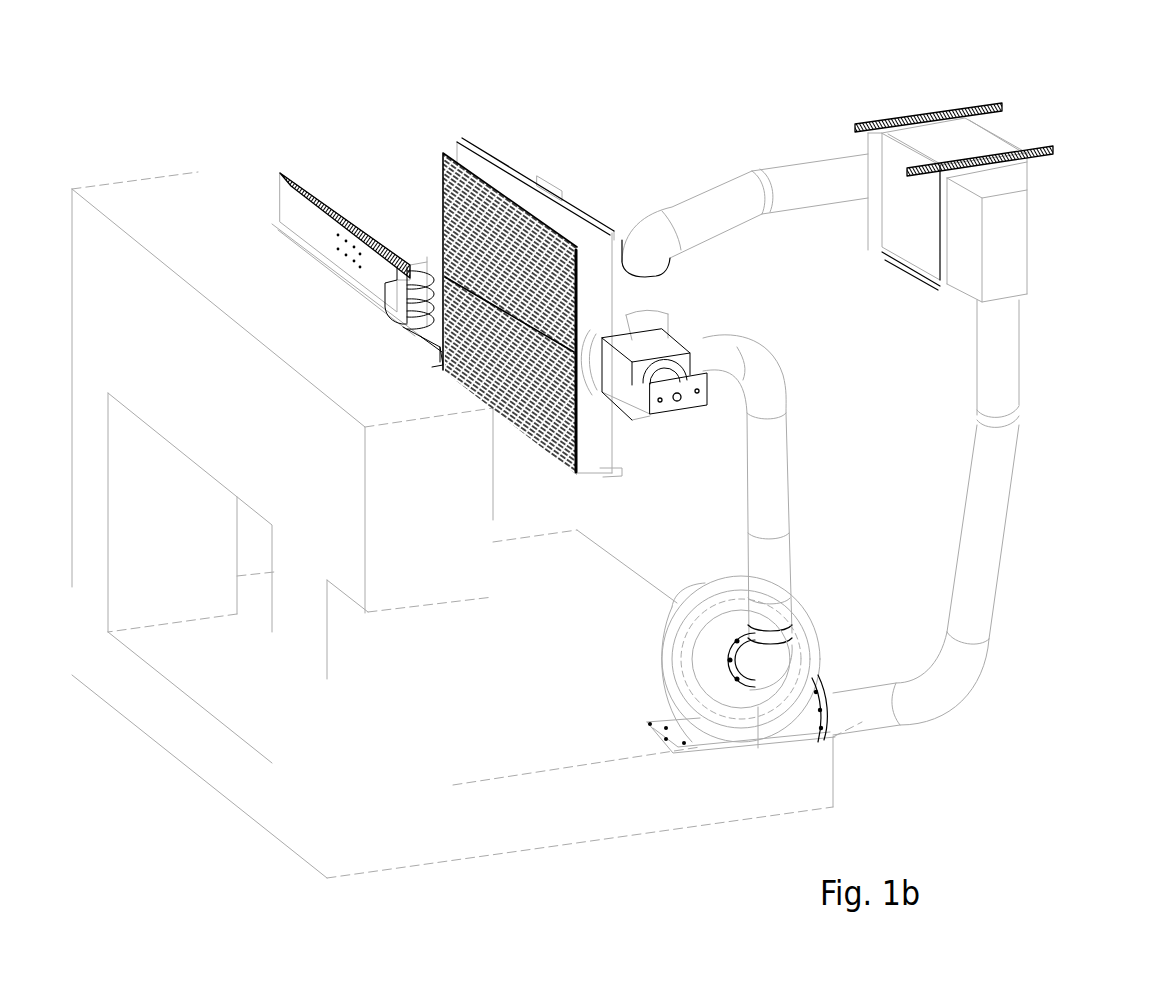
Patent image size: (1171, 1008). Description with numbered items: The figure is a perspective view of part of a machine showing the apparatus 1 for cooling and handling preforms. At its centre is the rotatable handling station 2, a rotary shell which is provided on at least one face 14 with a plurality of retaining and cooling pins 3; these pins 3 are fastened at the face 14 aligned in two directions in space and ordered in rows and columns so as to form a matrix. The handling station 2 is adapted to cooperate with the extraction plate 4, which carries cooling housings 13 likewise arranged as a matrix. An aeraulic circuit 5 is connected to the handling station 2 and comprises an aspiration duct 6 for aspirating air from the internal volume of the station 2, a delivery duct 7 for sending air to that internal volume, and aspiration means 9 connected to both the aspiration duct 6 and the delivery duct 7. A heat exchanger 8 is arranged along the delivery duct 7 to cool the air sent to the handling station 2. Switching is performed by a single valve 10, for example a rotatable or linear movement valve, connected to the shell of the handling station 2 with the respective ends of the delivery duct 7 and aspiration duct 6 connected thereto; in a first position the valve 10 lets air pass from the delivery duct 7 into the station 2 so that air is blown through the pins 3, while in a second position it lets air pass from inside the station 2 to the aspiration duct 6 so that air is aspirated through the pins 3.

The apparatus 1 is at (762, 134).
The rotatable handling station 2 is at (501, 240).
The retaining and cooling pins 3 is at (455, 163).
The extraction plate 4 is at (313, 203).
The aeraulic circuit 5 is at (695, 181).
The aspiration duct 6 is at (768, 475).
The delivery duct 7 is at (807, 183).
The heat exchanger 8 is at (967, 152).
The aspiration means 9 is at (798, 652).
The valve 10 is at (665, 358).
The cooling housings 13 is at (343, 198).
The face 14 is at (478, 163).